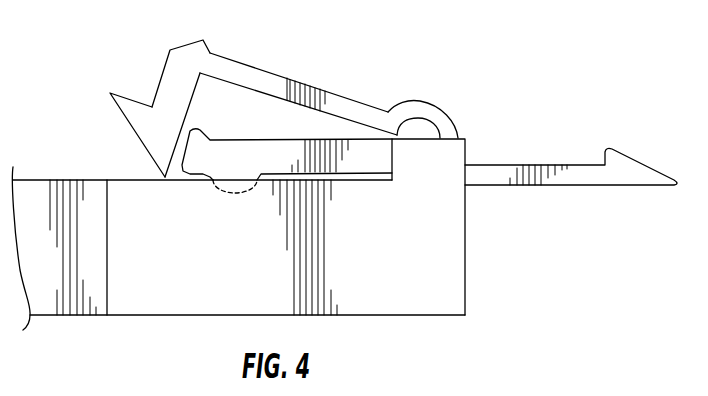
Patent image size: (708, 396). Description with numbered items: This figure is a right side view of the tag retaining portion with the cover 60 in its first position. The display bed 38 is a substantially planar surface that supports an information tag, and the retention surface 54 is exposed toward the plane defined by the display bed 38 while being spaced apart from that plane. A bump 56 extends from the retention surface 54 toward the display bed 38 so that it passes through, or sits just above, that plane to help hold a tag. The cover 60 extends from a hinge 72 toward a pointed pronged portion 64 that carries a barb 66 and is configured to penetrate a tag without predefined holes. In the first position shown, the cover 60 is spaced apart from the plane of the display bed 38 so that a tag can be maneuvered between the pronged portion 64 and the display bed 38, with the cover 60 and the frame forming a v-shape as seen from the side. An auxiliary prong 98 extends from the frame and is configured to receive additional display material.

The display bed 38 is at (133, 180).
The retention surface 54 is at (192, 180).
The bump 56 is at (235, 193).
The cover 60 is at (271, 101).
The pronged portion 64 is at (160, 83).
The barb 66 is at (124, 118).
The hinge 72 is at (448, 112).
The auxiliary prong 98 is at (640, 181).